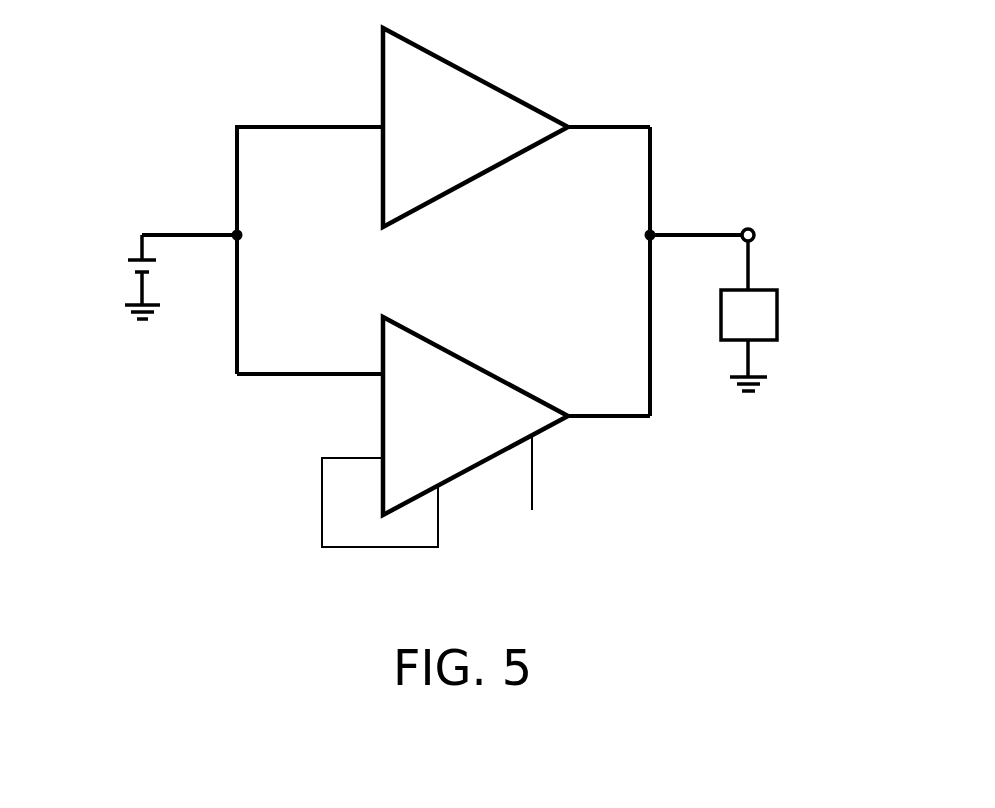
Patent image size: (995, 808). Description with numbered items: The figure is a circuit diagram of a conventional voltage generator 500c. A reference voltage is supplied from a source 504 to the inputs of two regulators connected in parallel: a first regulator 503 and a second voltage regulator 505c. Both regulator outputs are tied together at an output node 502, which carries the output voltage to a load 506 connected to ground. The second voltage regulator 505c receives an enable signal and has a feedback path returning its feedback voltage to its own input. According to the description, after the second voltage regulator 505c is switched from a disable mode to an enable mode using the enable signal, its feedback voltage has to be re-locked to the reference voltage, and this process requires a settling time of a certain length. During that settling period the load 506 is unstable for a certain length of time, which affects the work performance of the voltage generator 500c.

The voltage generator 500c is at (807, 603).
The first buffer 503 is at (492, 85).
The second voltage regulator 505c is at (490, 372).
The reference voltage source 504 is at (128, 268).
The output terminal 502 is at (777, 217).
The load 506 is at (778, 313).